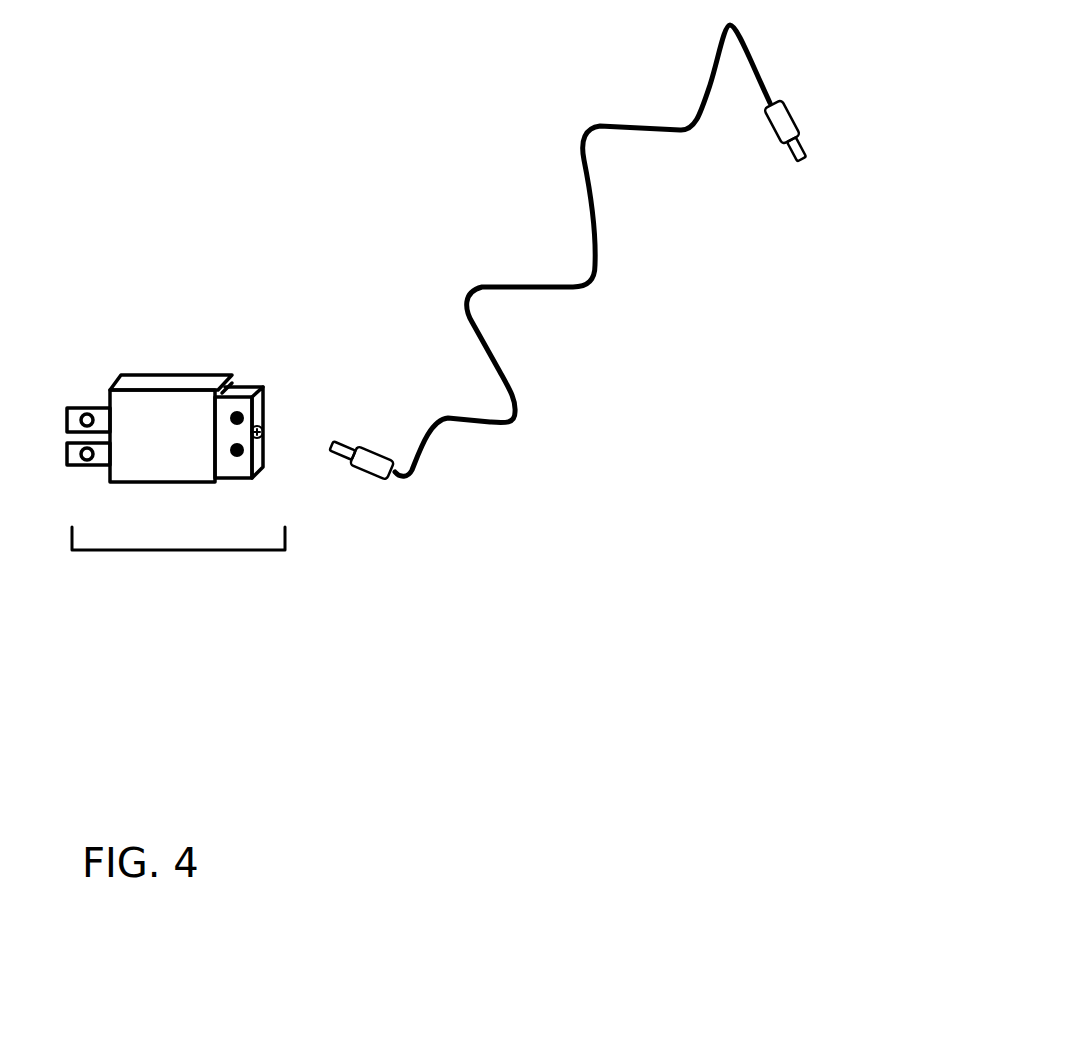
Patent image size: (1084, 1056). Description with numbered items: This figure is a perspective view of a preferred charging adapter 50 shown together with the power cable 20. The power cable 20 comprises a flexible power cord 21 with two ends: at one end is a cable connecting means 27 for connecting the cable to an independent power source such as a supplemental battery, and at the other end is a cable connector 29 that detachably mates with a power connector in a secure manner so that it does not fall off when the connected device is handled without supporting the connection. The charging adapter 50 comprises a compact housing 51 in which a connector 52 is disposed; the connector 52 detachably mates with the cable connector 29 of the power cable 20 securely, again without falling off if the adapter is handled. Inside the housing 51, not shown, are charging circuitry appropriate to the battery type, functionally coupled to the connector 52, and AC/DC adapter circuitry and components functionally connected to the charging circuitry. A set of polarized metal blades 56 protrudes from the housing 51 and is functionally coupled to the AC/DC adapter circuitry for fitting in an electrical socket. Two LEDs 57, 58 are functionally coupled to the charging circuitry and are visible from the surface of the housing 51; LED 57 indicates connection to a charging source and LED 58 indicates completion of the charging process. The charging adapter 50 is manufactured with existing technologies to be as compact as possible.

The power cable 20 is at (596, 318).
The flexible power cord 21 is at (557, 290).
The cable connecting means 27 is at (787, 115).
The cable connector 29 is at (348, 465).
The charging adapter 50 is at (160, 200).
The compact housing 51 is at (232, 550).
The connector 52 is at (265, 425).
The set of polarized metal blades 56 is at (77, 407).
The LED 57 is at (237, 450).
The LED 58 is at (238, 413).